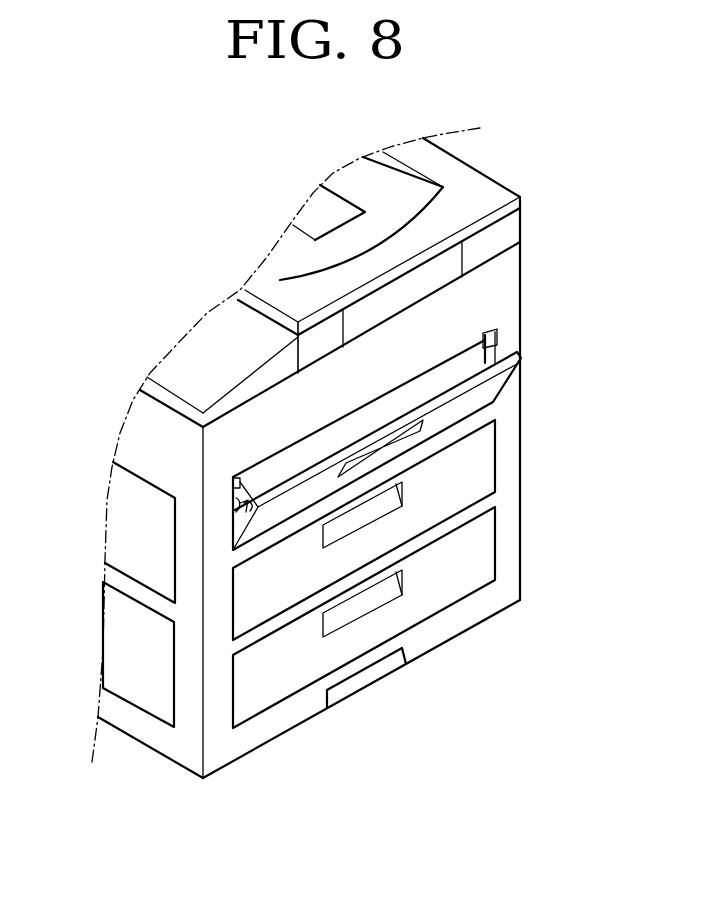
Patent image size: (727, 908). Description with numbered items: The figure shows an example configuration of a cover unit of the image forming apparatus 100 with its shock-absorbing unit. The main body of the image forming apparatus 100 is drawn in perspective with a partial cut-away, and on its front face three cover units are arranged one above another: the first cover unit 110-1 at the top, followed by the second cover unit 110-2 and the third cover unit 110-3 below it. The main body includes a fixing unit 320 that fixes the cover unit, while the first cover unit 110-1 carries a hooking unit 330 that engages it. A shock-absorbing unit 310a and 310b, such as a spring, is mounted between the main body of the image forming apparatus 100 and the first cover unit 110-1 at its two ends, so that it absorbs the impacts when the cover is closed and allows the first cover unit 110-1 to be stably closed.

The image forming apparatus 100 is at (519, 152).
The first cover unit 110-1 is at (500, 385).
The cover unit 110-2 is at (486, 463).
The cover unit 110-3 is at (486, 555).
The shock-absorbing unit 310a is at (250, 477).
The shock-absorbing unit 310b is at (494, 338).
The fixing unit 320 is at (238, 518).
The hooking unit 330 is at (252, 505).